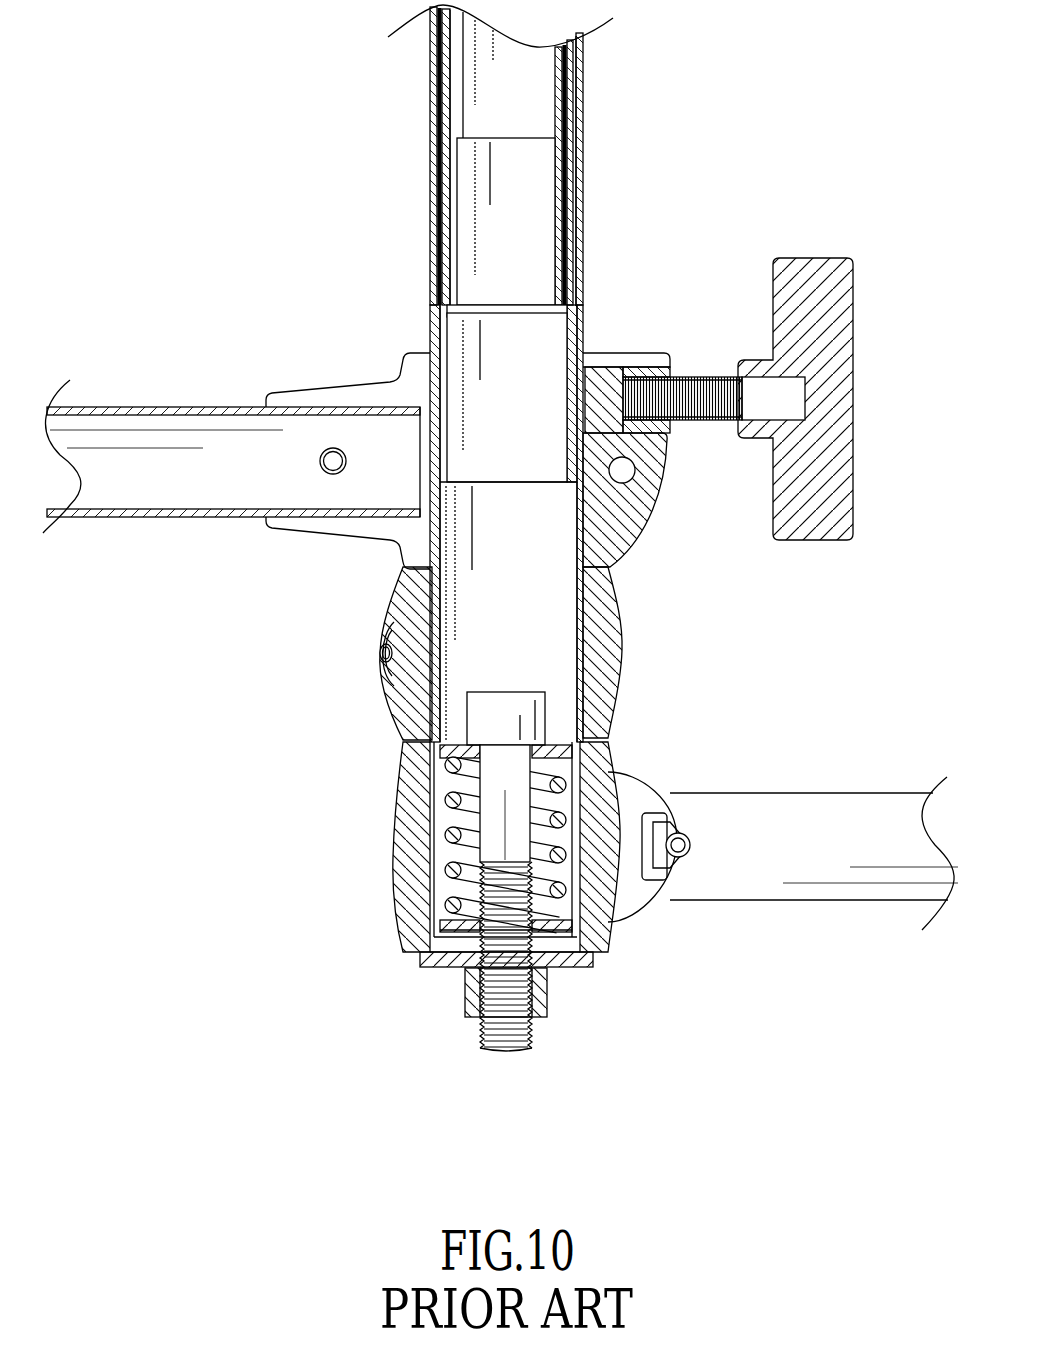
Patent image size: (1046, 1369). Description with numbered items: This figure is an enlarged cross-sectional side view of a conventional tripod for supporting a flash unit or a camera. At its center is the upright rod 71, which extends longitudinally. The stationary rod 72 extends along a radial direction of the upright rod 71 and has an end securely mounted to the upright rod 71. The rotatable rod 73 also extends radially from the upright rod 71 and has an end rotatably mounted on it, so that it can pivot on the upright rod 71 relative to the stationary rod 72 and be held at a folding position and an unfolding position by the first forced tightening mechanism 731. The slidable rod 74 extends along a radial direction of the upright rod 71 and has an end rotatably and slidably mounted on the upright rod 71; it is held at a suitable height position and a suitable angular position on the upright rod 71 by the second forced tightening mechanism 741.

The upright rod 71 is at (433, 119).
The stationary rod 72 is at (415, 688).
The rotatable rod 73 is at (760, 892).
The first forced tightening mechanism 731 is at (444, 882).
The slidable rod 74 is at (218, 428).
The second forced tightening mechanism 741 is at (696, 326).